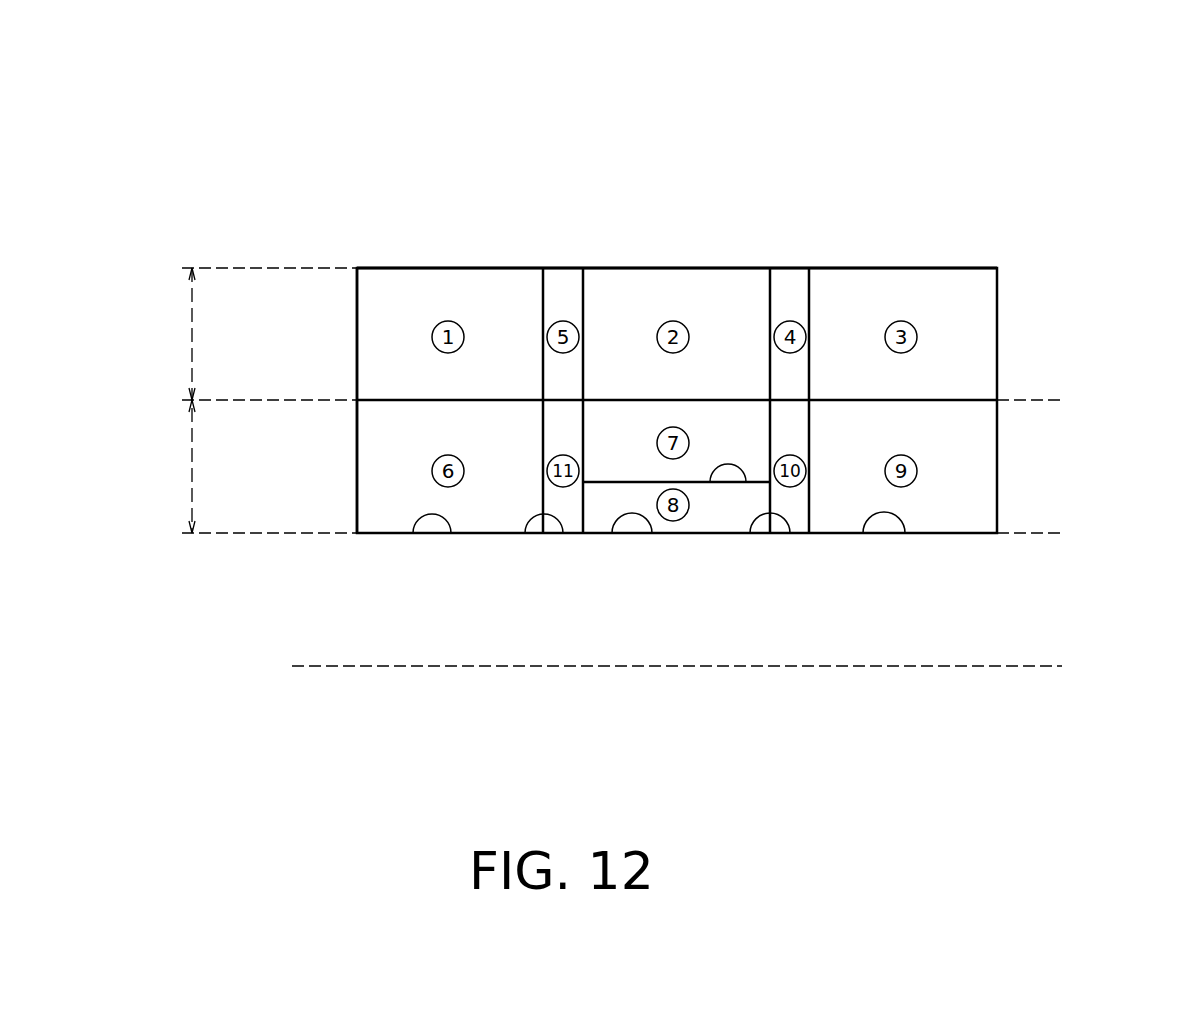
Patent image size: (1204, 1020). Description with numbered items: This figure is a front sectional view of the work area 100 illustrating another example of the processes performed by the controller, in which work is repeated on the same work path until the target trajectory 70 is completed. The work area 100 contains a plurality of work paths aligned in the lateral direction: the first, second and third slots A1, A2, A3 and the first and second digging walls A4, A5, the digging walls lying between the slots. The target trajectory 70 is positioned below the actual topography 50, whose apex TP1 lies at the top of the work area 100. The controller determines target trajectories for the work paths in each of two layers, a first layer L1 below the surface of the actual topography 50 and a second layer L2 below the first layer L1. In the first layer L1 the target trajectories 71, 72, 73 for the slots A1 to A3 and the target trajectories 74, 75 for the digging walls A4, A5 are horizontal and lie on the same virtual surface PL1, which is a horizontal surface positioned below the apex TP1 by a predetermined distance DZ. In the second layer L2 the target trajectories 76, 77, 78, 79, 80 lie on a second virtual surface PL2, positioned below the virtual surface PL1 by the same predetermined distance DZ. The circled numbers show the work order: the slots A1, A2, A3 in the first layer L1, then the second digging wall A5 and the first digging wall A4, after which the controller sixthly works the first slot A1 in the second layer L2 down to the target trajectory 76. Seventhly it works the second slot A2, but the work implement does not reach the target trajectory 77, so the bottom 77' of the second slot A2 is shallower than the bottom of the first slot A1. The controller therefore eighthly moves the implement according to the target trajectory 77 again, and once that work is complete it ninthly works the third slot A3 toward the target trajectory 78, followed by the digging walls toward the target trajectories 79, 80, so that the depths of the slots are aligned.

The work area 100 is at (367, 130).
The apex TP1 is at (445, 268).
The actual topography 50 is at (1017, 300).
The target trajectory 70 is at (388, 387).
The target trajectory 71 is at (412, 400).
The target trajectory 72 is at (625, 400).
The target trajectory 73 is at (845, 400).
The target trajectory 74 is at (785, 400).
The target trajectory 75 is at (560, 400).
The target trajectory 76 is at (413, 533).
The target trajectory 77 is at (624, 636).
The bottom 77' is at (704, 615).
The target trajectory 78 is at (863, 533).
The target trajectory 79 is at (750, 533).
The target trajectory 80 is at (525, 533).
The first slot A1 is at (473, 253).
The second slot A2 is at (672, 260).
The third slot A3 is at (900, 260).
The first digging wall A4 is at (563, 253).
The second digging wall A5 is at (790, 260).
The predetermined distance DZ is at (168, 400).
The first layer L1 is at (350, 335).
The second layer L2 is at (340, 470).
The virtual surface PL1 is at (1023, 398).
The virtual surface PL2 is at (1023, 531).